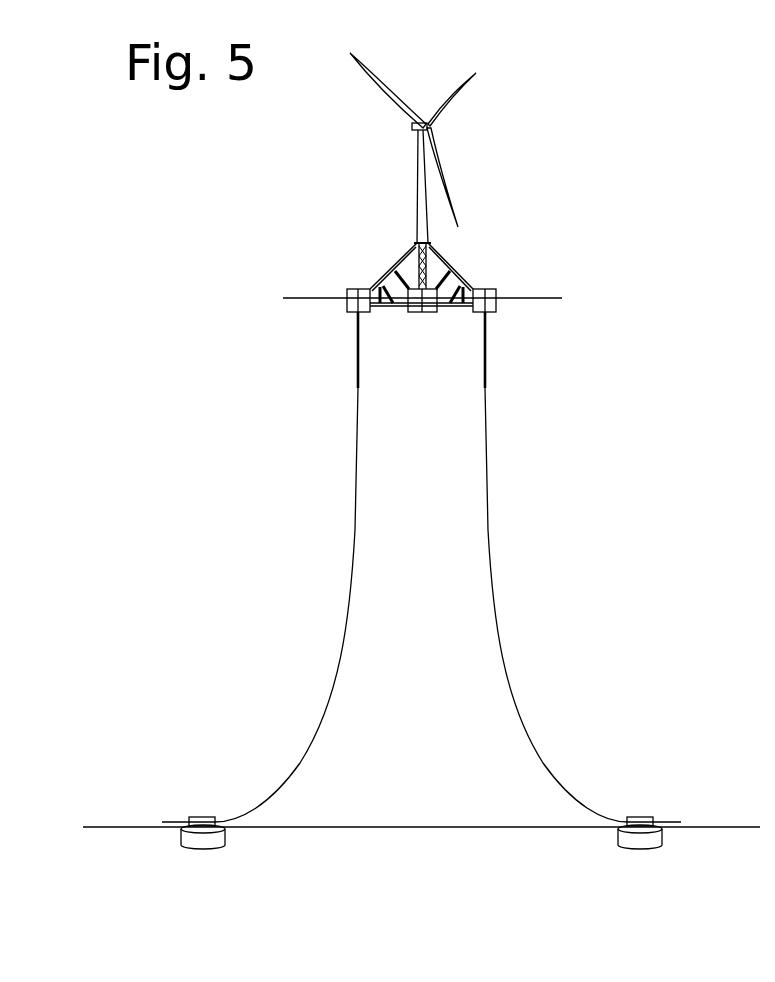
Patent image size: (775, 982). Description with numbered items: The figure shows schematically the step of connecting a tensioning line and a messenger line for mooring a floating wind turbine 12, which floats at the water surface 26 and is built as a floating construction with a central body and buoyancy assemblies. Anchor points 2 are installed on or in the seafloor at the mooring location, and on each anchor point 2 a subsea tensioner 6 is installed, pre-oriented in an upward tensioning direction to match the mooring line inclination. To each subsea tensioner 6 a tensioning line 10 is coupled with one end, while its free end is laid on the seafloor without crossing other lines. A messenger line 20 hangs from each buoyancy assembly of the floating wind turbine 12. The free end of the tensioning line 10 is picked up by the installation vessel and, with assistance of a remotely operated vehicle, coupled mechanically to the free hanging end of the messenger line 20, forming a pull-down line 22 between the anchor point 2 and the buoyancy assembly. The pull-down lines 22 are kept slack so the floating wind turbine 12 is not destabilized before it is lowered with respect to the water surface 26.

The floating construction 12 is at (490, 233).
The water surface 26 is at (548, 298).
The messenger line 20 is at (487, 343).
The pull-down line 22 is at (421, 605).
The tensioning line 10 is at (500, 642).
The subsea tensioner 6 is at (204, 818).
The anchor point 2 is at (210, 845).